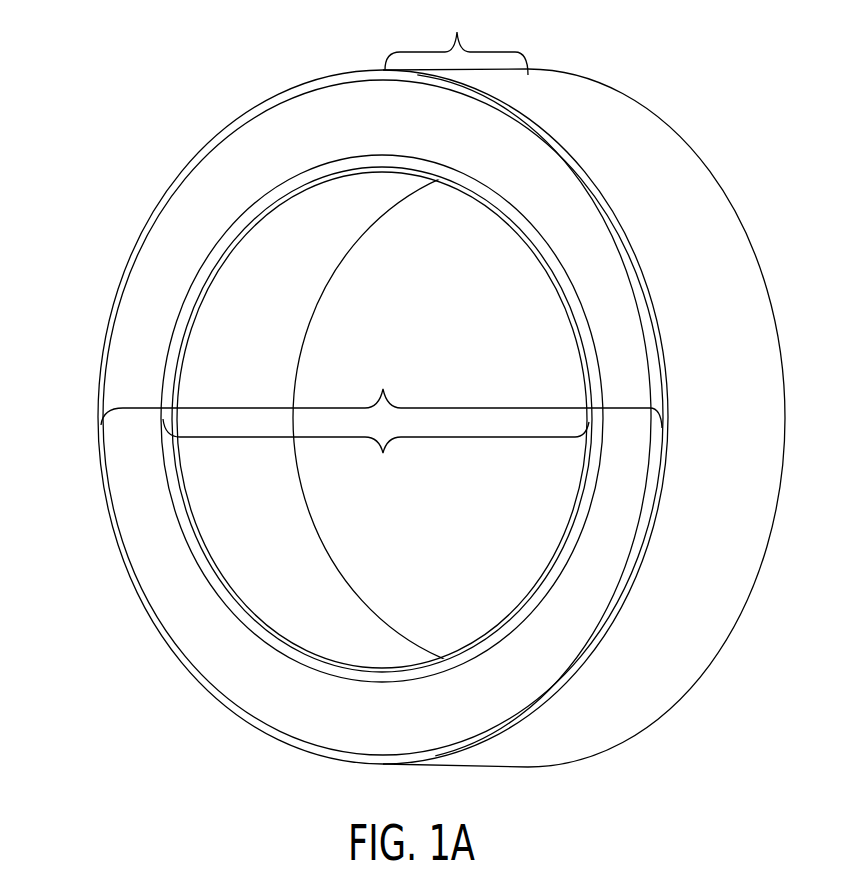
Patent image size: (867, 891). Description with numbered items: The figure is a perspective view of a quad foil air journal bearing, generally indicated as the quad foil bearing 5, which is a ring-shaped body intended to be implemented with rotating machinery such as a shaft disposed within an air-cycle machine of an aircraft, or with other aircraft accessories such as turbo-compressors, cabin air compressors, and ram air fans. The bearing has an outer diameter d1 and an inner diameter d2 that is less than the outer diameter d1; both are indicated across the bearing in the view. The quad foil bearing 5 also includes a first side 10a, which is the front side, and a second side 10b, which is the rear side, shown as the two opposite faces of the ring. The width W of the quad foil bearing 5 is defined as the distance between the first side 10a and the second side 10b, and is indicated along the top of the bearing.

The quad foil bearing 5 is at (420, 399).
The first side 10a is at (120, 341).
The second side 10b is at (735, 230).
The width W is at (456, 37).
The outer diameter d1 is at (381, 392).
The inner diameter d2 is at (376, 456).